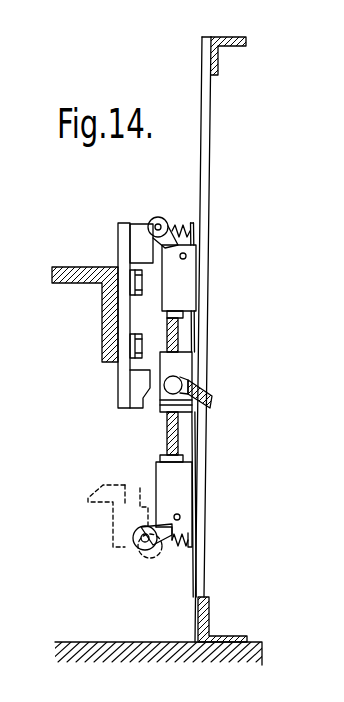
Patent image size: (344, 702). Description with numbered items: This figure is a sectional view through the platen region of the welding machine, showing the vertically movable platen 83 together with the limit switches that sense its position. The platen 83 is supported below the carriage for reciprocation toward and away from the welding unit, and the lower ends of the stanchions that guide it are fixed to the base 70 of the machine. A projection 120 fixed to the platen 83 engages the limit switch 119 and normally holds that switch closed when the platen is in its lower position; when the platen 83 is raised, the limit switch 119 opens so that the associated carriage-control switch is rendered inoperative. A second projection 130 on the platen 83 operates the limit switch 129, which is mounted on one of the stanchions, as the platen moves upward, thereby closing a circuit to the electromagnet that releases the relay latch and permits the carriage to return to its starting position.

The base 70 is at (108, 642).
The platen 83 is at (67, 267).
The projection 120 is at (142, 395).
The projection 130 is at (137, 236).
The limit switch 129 is at (190, 287).
The limit switch 119 is at (180, 497).